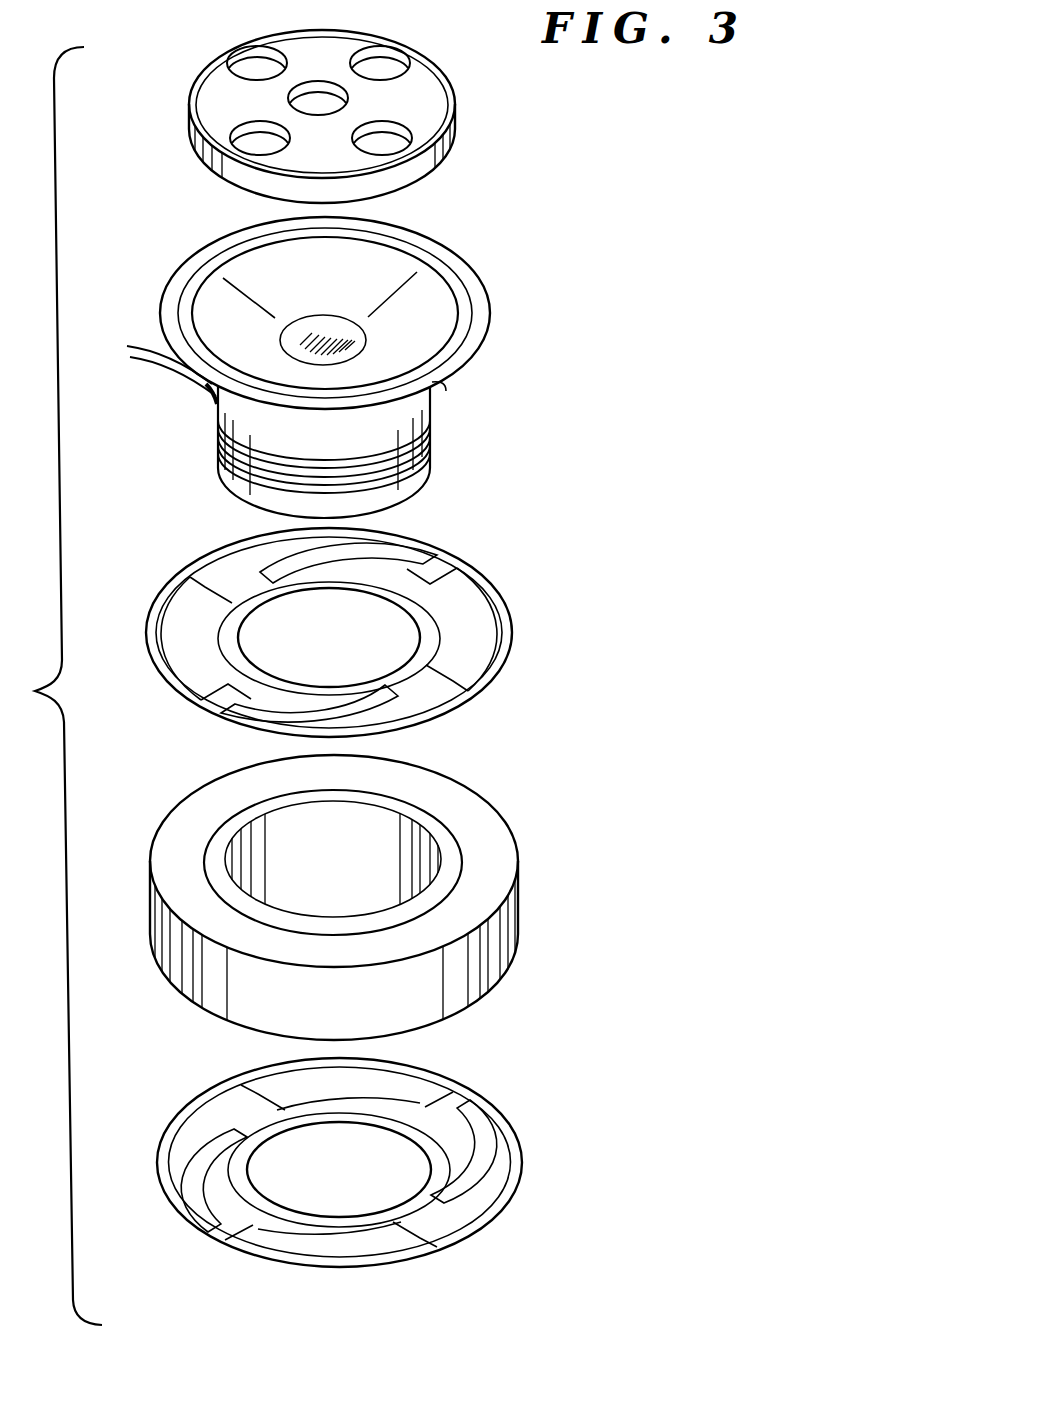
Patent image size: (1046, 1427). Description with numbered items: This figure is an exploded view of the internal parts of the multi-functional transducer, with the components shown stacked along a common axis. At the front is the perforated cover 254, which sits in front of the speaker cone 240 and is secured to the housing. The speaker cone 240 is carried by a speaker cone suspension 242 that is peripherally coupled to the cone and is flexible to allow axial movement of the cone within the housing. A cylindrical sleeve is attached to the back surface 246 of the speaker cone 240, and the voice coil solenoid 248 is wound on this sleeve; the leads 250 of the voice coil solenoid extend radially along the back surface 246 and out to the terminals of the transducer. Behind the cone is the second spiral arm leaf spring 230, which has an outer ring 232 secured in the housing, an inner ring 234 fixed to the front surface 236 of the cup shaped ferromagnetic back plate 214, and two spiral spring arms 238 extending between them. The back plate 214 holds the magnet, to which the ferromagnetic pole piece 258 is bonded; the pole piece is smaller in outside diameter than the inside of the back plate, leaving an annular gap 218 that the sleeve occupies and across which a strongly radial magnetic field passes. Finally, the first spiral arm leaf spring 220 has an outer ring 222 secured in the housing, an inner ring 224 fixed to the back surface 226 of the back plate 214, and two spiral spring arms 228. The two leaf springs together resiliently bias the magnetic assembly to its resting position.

The perforated cover 254 is at (184, 110).
The speaker cone 240 is at (238, 270).
The speaker cone suspension 242 is at (193, 288).
The back surface 246 is at (440, 384).
The voice coil solenoid 248 is at (212, 419).
The leads 250 is at (130, 346).
The second spiral arm leaf spring 230 is at (152, 641).
The outer ring 232 is at (166, 685).
The inner ring 234 is at (314, 578).
The spiral spring arms 238 is at (300, 556).
The front surface 236 is at (183, 833).
The cup shaped ferromagnetic back plate 214 is at (152, 922).
The ferromagnetic pole piece 258 is at (418, 840).
The annular gap 218 is at (338, 925).
The back surface 226 is at (481, 1001).
The first spiral arm leaf spring 220 is at (160, 1168).
The outer ring 222 is at (183, 1118).
The inner ring 224 is at (302, 1214).
The spiral spring arms 228 is at (197, 1178).